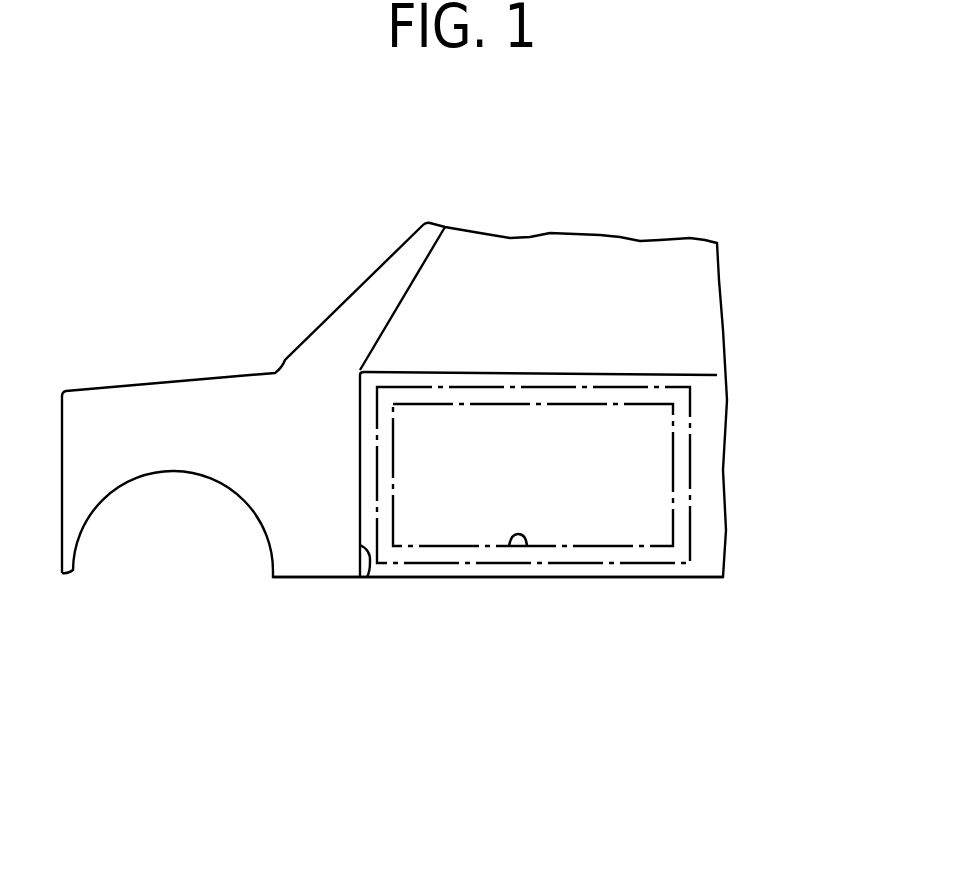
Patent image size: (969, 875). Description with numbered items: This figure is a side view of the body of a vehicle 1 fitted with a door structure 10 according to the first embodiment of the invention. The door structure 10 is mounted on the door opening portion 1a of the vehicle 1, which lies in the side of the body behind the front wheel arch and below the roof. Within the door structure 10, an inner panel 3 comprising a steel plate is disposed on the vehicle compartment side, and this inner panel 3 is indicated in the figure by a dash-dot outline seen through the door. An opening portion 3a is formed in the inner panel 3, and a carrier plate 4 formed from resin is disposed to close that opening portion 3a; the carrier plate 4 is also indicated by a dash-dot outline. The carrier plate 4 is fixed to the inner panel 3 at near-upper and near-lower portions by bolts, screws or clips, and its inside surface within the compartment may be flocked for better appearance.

The vehicle 1 is at (290, 593).
The door opening portion 1a is at (367, 579).
The door structure 10 is at (617, 580).
The inner panel 3 is at (580, 570).
The opening portion 3a is at (523, 547).
The carrier plate 4 is at (673, 557).